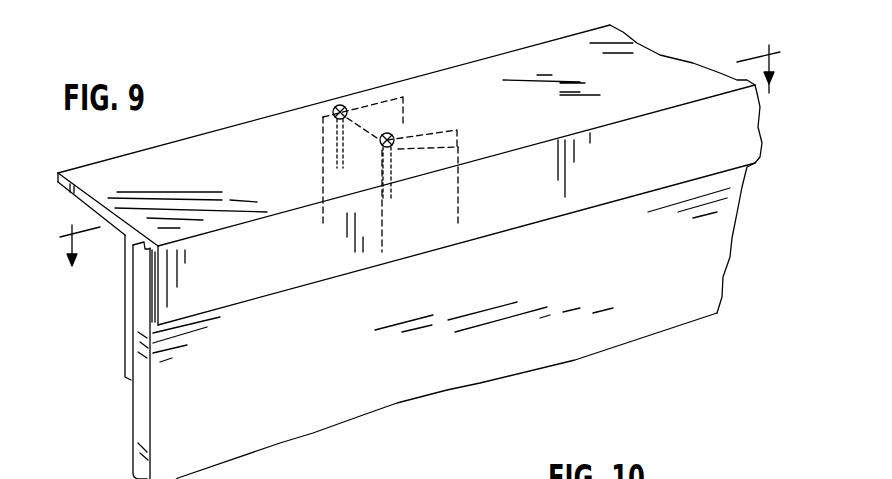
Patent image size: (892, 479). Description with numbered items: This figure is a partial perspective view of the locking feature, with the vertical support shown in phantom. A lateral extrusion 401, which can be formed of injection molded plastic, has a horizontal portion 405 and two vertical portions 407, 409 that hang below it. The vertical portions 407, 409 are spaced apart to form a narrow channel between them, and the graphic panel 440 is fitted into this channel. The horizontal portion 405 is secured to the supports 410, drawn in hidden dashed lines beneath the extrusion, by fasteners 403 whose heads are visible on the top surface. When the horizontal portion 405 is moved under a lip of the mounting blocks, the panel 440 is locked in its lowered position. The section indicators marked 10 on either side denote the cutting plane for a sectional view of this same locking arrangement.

The lateral extrusion 401 is at (503, 67).
The fasteners 403 is at (338, 110).
The horizontal portion 405 is at (85, 185).
The vertical portion 407 is at (128, 307).
The vertical portion 409 is at (257, 283).
The supports 410 is at (462, 145).
The graphic panel 440 is at (138, 417).
The section line 10- 10 is at (407, 133).